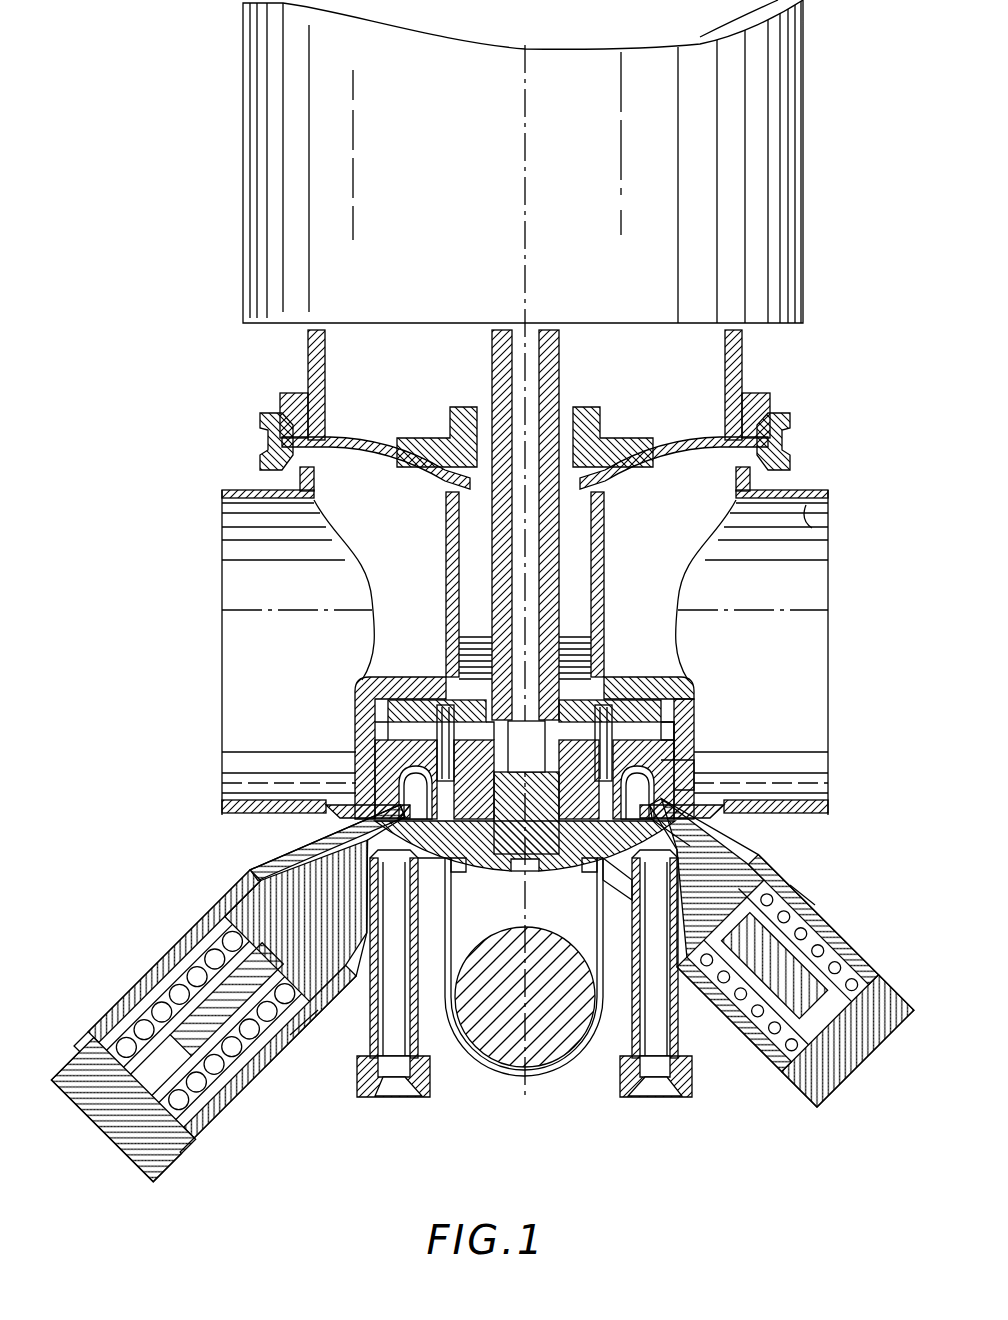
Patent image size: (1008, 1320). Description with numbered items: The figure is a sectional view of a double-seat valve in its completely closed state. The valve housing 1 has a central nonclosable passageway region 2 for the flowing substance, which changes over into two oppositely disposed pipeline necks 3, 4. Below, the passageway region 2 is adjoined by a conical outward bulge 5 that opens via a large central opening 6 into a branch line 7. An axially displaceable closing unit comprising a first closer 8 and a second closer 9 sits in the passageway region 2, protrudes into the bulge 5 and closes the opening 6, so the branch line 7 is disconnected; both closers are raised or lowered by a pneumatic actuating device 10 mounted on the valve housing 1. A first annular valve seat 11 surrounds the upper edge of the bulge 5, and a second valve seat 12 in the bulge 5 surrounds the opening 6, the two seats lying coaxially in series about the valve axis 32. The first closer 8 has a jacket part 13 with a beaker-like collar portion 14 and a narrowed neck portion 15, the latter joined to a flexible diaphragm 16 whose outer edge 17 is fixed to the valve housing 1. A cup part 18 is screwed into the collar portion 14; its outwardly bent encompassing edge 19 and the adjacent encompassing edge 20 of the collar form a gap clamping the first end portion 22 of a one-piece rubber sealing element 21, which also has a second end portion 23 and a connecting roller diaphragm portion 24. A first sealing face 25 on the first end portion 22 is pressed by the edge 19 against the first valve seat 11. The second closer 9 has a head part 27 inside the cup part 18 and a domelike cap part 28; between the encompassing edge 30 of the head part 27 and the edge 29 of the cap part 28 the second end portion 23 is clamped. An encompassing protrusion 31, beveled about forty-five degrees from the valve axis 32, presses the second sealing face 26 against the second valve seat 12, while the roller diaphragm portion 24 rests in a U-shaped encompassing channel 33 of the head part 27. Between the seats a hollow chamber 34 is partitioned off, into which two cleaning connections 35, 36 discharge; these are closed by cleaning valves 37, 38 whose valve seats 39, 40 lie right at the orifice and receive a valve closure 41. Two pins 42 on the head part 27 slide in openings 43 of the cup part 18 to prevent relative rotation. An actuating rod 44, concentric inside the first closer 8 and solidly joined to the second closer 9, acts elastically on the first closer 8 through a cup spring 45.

The valve housing 1 is at (228, 448).
The central nonclosable passageway region 2 is at (368, 566).
The pipeline neck 3 is at (232, 806).
The pipeline neck 4 is at (812, 515).
The conical outward bulge 5 is at (644, 963).
The central opening 6 is at (581, 894).
The branch line 7 is at (536, 1050).
The first closer 8 is at (710, 720).
The second closer 9 is at (682, 702).
The pneumatic actuating device 10 is at (590, 199).
The first annular valve seat 11 is at (350, 830).
The second valve seat 12 is at (405, 963).
The jacket part 13 is at (630, 692).
The collar portion 14 is at (712, 752).
The neck portion 15 is at (604, 516).
The flexible diaphragm 16 is at (633, 467).
The outer edge 17 is at (750, 445).
The cup part 18 is at (372, 688).
The encompassing edge 19 is at (375, 792).
The encompassing edge 20 is at (398, 792).
The sealing element 21 is at (700, 822).
The first end portion 22 is at (810, 810).
The second end portion 23 is at (472, 878).
The roller diaphragm portion 24 is at (526, 746).
The first sealing face 25 is at (460, 690).
The second sealing face 26 is at (524, 967).
The head part 27 is at (614, 792).
The cap part 28 is at (525, 845).
The edge 29 is at (572, 876).
The encompassing edge 30 is at (579, 779).
The encompassing protrusion 31 is at (705, 856).
The valve axis 32 is at (524, 268).
The encompassing channel 33 is at (676, 742).
The hollow chamber 34 is at (690, 795).
The cleaning connection 35 is at (358, 1092).
The cleaning connection 36 is at (660, 1080).
The cleaning valve 37 is at (205, 955).
The cleaning valve 38 is at (845, 962).
The valve seat 39 is at (298, 866).
The valve seat 40 is at (638, 865).
The valve closure 41 is at (302, 1030).
The pin 42 is at (660, 680).
The opening 43 is at (444, 704).
The actuating rod 44 is at (492, 350).
The cup spring 45 is at (585, 652).